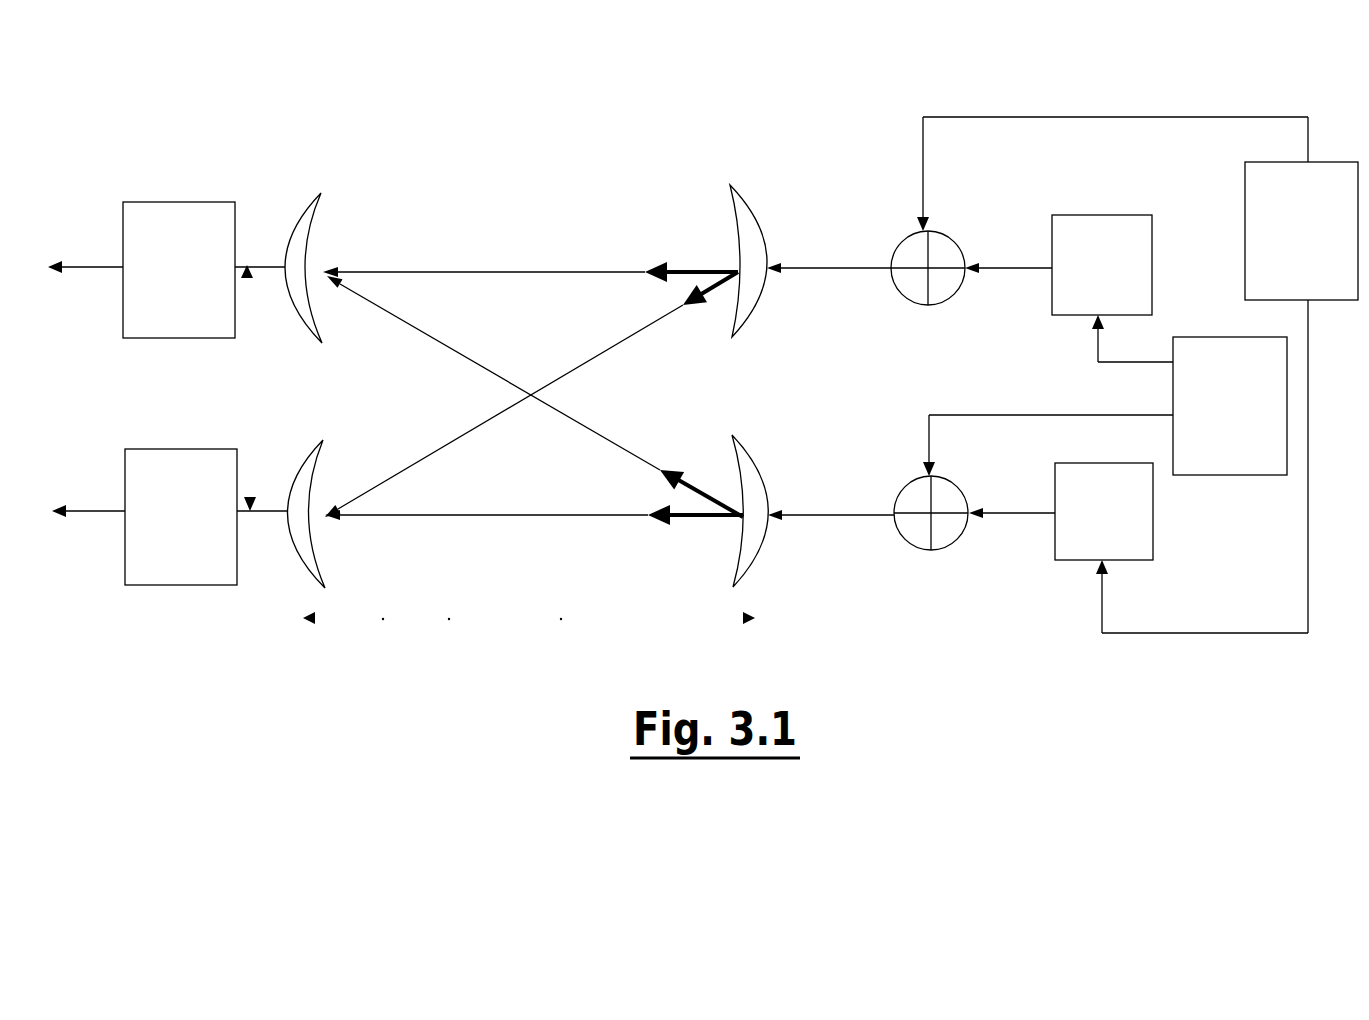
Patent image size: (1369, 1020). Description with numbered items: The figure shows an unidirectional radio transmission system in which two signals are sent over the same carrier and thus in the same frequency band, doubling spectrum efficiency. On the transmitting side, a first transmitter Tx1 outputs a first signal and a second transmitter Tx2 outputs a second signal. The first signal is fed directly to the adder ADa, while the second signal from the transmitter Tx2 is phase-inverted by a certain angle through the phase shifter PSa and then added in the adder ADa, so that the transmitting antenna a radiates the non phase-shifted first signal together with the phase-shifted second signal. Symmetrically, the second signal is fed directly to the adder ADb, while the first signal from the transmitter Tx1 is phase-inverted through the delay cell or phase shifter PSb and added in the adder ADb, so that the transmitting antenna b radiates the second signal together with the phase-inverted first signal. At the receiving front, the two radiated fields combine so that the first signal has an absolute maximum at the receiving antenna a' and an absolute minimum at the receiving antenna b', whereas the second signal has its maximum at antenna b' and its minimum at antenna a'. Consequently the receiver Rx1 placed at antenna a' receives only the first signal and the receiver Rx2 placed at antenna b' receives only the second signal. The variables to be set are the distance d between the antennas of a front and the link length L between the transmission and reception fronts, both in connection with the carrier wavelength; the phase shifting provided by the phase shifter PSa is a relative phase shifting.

The receiver Rx1 is at (166, 270).
The receiver Rx2 is at (169, 517).
The transmitter Tx1 is at (1301, 231).
The transmitter Tx2 is at (1230, 406).
The phase shifter PSa is at (1088, 215).
The phase shifter PSb is at (1153, 540).
The adder ADa is at (897, 292).
The adder ADb is at (942, 550).
The transmitting antenna a is at (760, 252).
The transmitting antenna b is at (764, 514).
The receiving antenna a' is at (298, 260).
The receiving antenna b' is at (290, 517).
The distance between the antennas d is at (276, 387).
The link length L is at (529, 600).